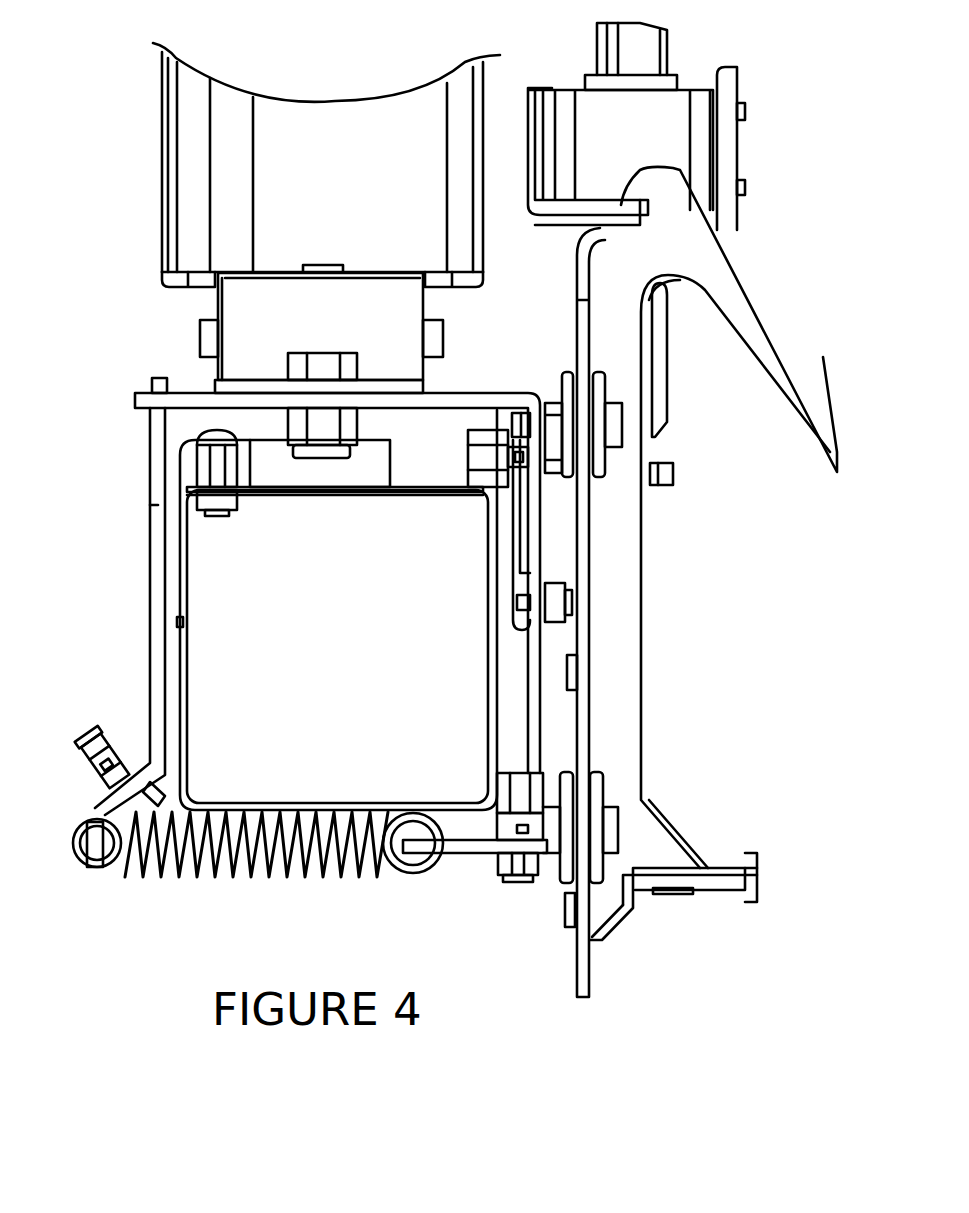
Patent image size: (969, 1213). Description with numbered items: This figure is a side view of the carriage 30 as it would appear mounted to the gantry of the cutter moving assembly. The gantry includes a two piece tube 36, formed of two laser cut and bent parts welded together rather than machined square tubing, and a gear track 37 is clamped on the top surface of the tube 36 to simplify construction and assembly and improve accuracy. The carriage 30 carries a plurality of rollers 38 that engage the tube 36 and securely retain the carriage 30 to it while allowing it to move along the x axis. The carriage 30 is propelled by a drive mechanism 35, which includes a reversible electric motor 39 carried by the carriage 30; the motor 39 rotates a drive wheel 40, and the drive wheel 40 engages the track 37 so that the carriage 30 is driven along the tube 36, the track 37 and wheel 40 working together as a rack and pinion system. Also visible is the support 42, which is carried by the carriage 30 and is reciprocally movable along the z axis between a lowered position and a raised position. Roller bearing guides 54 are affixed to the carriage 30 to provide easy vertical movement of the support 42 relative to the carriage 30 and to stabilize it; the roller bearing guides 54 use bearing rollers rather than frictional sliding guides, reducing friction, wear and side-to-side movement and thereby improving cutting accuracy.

The carriage 30 is at (497, 400).
The drive mechanism 35 is at (363, 430).
The two piece tube 36 is at (182, 630).
The track 37 is at (242, 472).
The rollers 38 is at (487, 443).
The reversible electric motor 39 is at (182, 203).
The drive wheel 40 is at (388, 453).
The support 42 is at (583, 967).
The roller bearing guides 54 is at (594, 480).